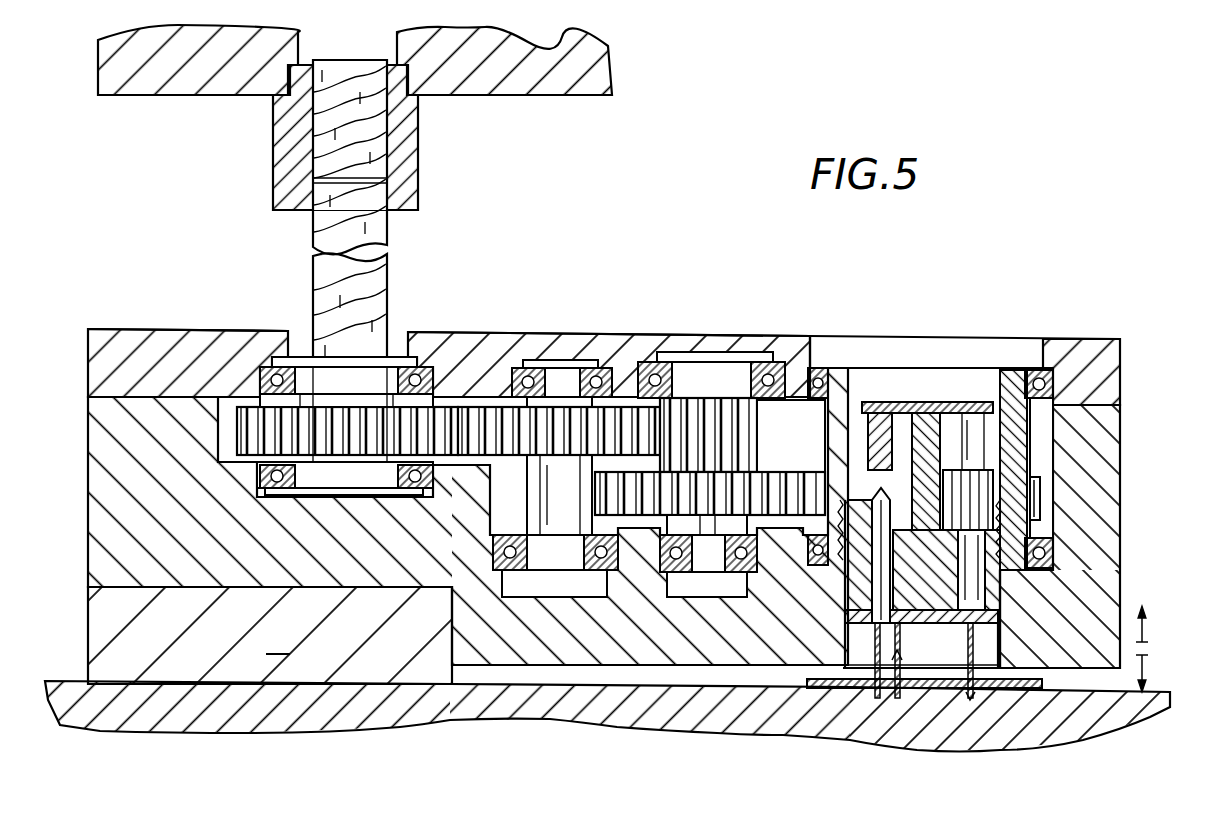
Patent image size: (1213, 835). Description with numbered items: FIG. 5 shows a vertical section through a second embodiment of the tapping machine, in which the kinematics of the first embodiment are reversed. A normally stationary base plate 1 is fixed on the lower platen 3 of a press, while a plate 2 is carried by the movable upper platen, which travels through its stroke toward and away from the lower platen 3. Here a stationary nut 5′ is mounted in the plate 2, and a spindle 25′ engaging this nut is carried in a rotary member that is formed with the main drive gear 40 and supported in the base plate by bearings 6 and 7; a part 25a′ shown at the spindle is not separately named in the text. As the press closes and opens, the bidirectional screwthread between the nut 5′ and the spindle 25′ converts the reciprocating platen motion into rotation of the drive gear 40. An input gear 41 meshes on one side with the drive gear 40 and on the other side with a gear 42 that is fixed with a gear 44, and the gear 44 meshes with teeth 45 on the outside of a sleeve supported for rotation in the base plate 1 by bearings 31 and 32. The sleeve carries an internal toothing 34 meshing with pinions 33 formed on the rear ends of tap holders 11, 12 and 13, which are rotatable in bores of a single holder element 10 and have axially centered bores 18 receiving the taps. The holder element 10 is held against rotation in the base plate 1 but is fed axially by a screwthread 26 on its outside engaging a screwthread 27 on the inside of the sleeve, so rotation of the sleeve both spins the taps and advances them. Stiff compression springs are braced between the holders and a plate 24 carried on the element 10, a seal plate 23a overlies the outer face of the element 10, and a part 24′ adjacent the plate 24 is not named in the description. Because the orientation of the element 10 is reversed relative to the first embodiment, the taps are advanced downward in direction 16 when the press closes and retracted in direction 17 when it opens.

The base plate 1 is at (1085, 360).
The plate 2 is at (600, 82).
The lower platen 3 is at (445, 707).
The stationary nut 5′ is at (410, 153).
The bearing 6 is at (448, 353).
The bearing 7 is at (427, 495).
The holder element 10 is at (962, 625).
The tap holder 11 is at (812, 595).
The tap holder 12 is at (896, 640).
The tap holder 13 is at (1040, 668).
The direction 16 is at (1142, 661).
The direction 17 is at (1142, 631).
The axially centered bore 18 is at (876, 615).
The seal plate 23a is at (930, 690).
The plate 24 is at (968, 405).
The spindle flange 24′ is at (900, 405).
The spindle 25′ is at (388, 270).
The spindle nut bearing 25a′ is at (403, 363).
The screwthread 26 is at (1118, 668).
The screwthread 27 is at (843, 550).
The bearing 31 is at (1053, 553).
The bearing 32 is at (1035, 368).
The pinion 33 is at (1005, 483).
The internal toothing 34 is at (1000, 447).
The main drive gear 40 is at (248, 407).
The input gear 41 is at (632, 407).
The gear 42 is at (752, 428).
The gear 44 is at (792, 472).
The teeth 45 is at (1040, 510).